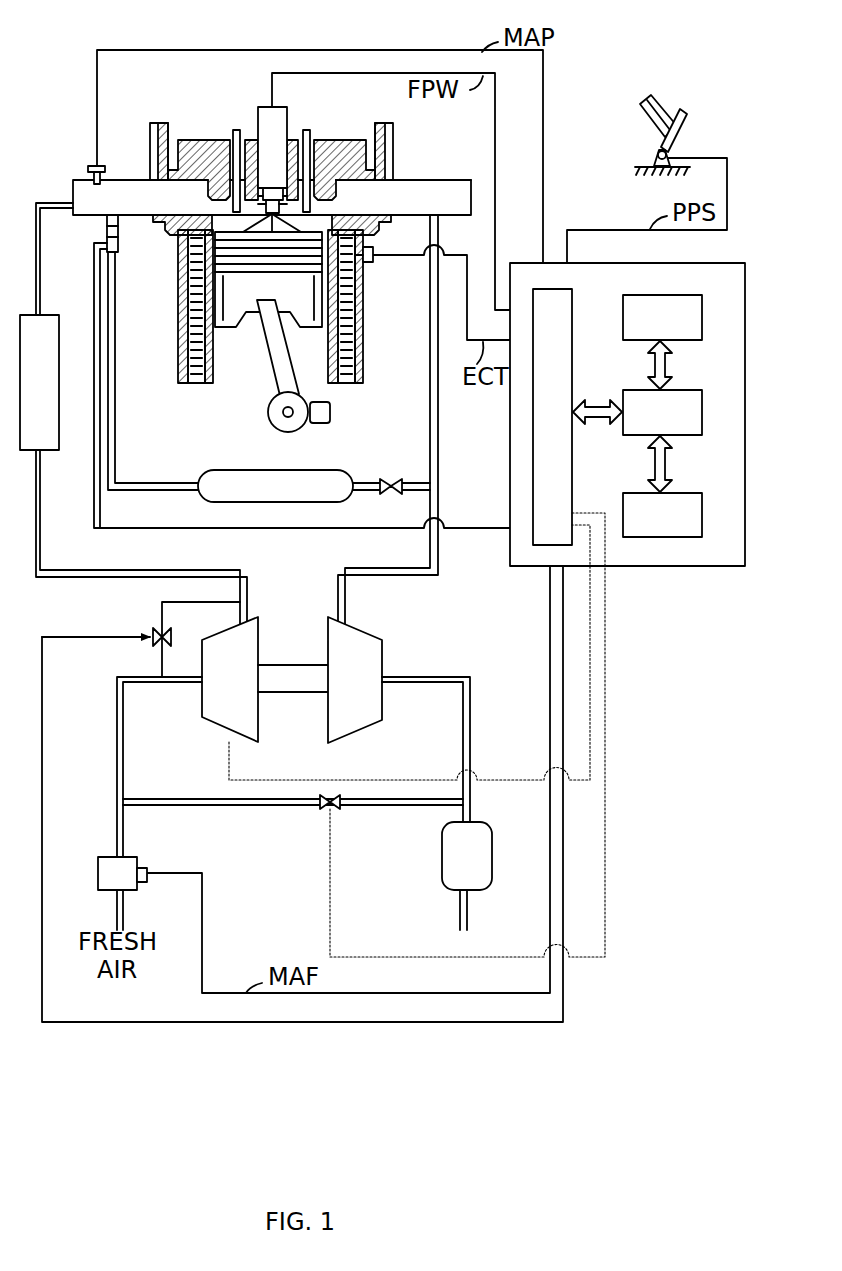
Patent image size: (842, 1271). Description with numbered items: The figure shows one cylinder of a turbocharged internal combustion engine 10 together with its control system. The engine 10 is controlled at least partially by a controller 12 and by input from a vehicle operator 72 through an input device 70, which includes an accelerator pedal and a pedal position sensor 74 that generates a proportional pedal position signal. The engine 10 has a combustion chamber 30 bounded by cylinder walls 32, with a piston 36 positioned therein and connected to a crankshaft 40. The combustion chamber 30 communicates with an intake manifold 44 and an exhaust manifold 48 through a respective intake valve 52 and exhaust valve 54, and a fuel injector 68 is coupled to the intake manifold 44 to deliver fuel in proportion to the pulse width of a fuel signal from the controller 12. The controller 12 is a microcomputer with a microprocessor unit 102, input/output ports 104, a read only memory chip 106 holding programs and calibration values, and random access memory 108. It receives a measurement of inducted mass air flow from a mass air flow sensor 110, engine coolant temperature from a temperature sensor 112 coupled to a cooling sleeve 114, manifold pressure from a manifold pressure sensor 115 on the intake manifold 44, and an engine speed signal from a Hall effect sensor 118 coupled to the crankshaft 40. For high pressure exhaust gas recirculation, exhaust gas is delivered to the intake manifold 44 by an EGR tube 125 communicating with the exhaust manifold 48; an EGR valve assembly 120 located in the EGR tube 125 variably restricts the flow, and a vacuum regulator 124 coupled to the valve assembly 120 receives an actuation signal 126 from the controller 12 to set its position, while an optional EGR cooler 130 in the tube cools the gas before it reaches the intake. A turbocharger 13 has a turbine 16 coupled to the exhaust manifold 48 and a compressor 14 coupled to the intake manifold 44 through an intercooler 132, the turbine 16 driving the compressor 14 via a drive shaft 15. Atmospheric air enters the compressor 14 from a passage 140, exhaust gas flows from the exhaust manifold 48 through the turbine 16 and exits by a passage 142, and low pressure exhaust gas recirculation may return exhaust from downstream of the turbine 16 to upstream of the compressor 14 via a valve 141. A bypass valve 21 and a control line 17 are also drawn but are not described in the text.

The internal combustion engine 10 is at (175, 428).
The controller 12 is at (706, 263).
The turbocharger 13 is at (300, 745).
The compressor 14 is at (230, 679).
The drive shaft 15 is at (290, 665).
The turbine 16 is at (355, 680).
The wastegate control line 17 is at (366, 780).
The compressor bypass valve 21 is at (155, 630).
The combustion chamber 30 is at (245, 226).
The cylinder walls 32 is at (216, 378).
The piston 36 is at (255, 306).
The crankshaft 40 is at (286, 430).
The intake manifold 44 is at (272, 197).
The exhaust manifold 48 is at (403, 196).
The intake valve 52 is at (238, 212).
The exhaust valve 54 is at (305, 213).
The fuel injector 68 is at (265, 122).
The input device 70 is at (683, 130).
The vehicle operator 72 is at (641, 118).
The pedal position sensor 74 is at (650, 158).
The microprocessor unit 102 is at (677, 390).
The input/output ports 104 is at (575, 312).
The read only memory chip 106 is at (652, 295).
The random access memory 108 is at (677, 493).
The mass air flow sensor 110 is at (140, 870).
The temperature sensor 112 is at (374, 255).
The cooling sleeve 114 is at (348, 337).
The manifold pressure sensor 115 is at (88, 169).
The Hall effect sensor 118 is at (323, 420).
The EGR valve assembly 120 is at (118, 224).
The vacuum regulator 124 is at (108, 240).
The EGR tube 125 is at (130, 488).
The actuation signal 126 is at (103, 530).
The EGR cooler 130 is at (314, 486).
The intercooler 132 is at (133, 413).
The passage 140 is at (113, 770).
The valve 141 is at (326, 810).
The passage 142 is at (472, 712).